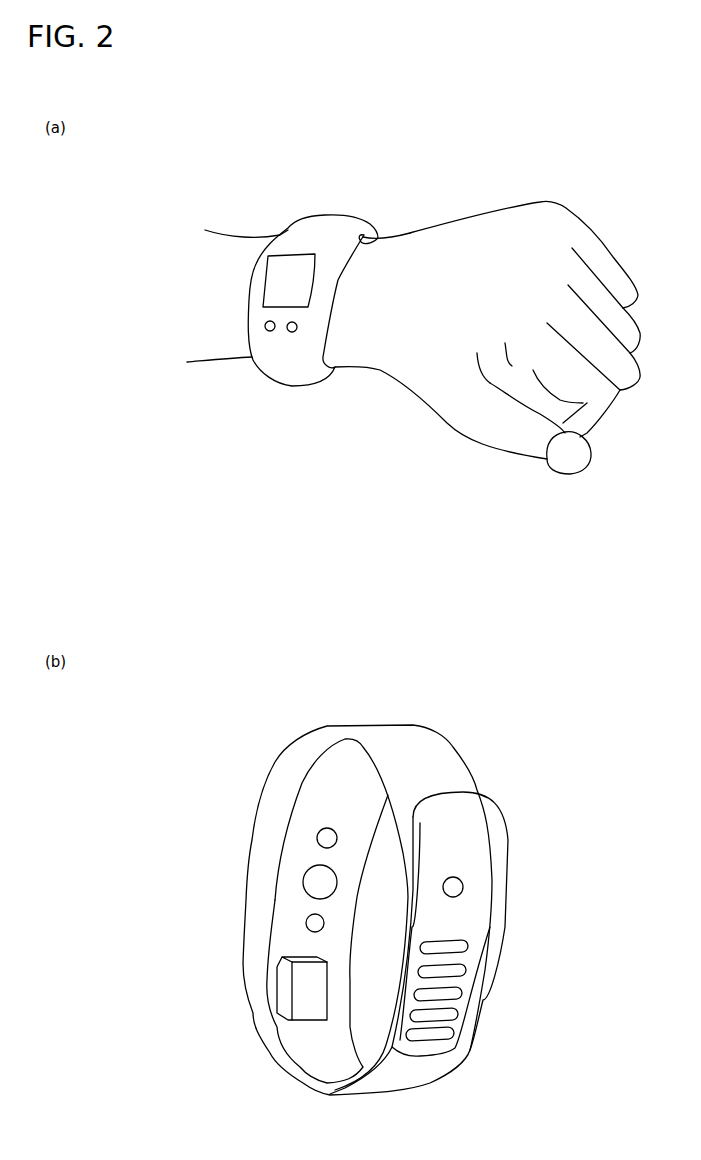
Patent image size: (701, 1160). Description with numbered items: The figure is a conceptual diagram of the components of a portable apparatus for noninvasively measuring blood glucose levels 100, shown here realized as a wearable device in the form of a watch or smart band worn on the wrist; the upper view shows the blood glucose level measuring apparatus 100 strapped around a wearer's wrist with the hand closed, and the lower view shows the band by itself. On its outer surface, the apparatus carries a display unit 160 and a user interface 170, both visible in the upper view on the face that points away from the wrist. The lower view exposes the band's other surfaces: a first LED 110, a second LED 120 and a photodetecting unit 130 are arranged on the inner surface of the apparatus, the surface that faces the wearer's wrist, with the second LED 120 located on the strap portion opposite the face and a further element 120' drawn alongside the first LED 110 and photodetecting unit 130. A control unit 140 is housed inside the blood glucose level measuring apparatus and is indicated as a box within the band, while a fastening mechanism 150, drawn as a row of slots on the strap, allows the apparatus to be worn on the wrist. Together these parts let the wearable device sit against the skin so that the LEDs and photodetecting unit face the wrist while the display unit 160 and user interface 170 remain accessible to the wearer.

The portable apparatus for noninvasively measuring blood glucose levels 100 is at (345, 215).
The first LED 110 is at (322, 837).
The second LED 120 is at (505, 876).
The sensor on outer surface 120' is at (248, 942).
The photodetecting unit 130 is at (317, 890).
The control unit 140 is at (305, 1000).
The fastening mechanism 150 is at (437, 997).
The display unit 160 is at (290, 270).
The user interface 170 is at (268, 329).